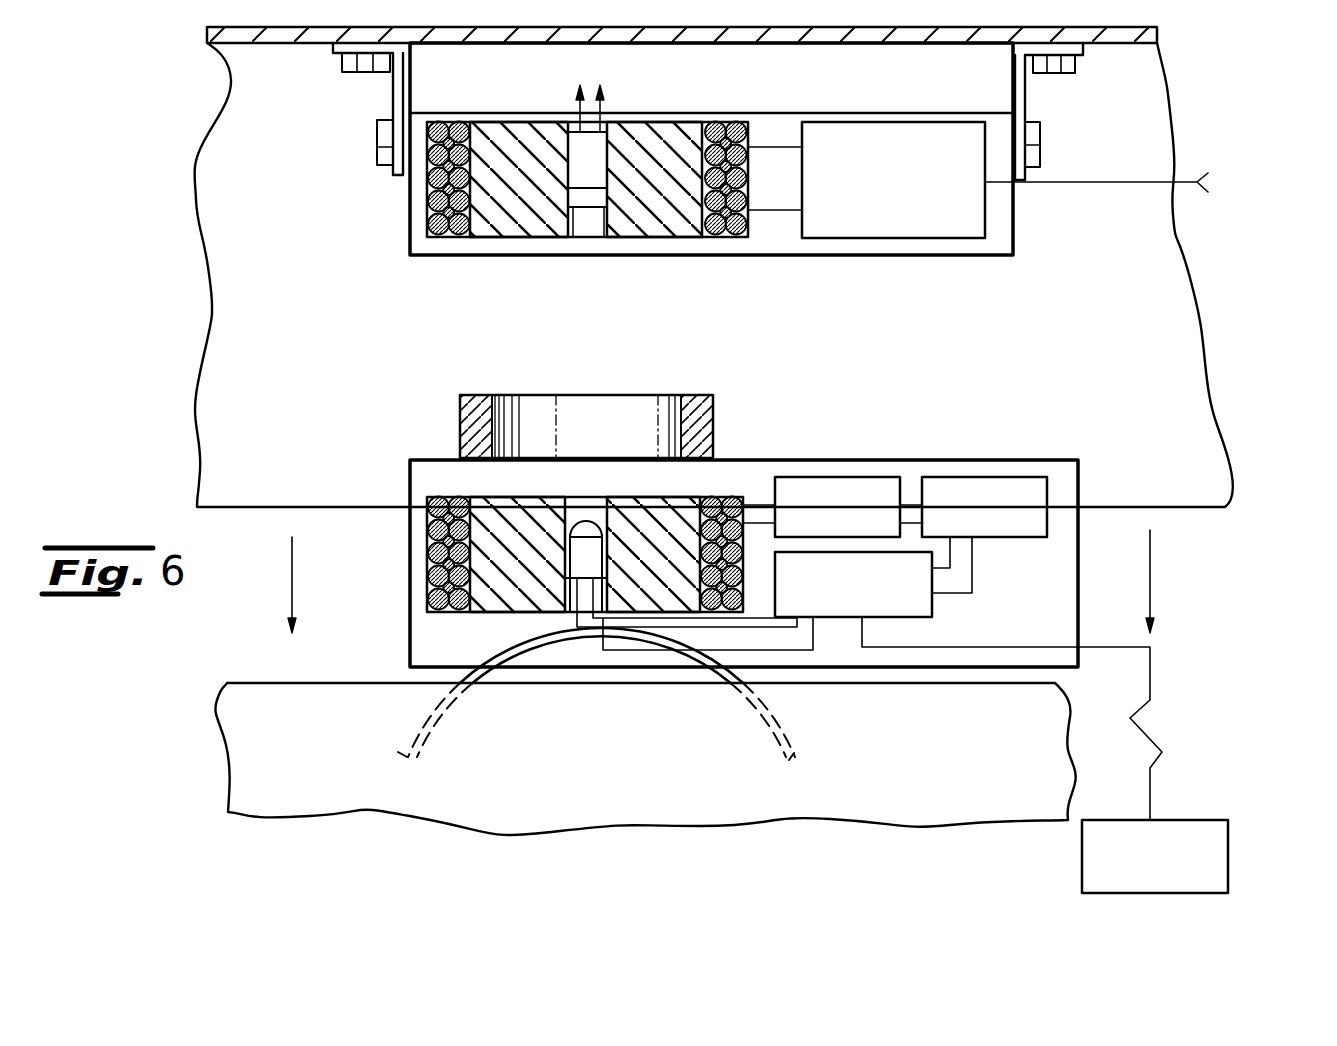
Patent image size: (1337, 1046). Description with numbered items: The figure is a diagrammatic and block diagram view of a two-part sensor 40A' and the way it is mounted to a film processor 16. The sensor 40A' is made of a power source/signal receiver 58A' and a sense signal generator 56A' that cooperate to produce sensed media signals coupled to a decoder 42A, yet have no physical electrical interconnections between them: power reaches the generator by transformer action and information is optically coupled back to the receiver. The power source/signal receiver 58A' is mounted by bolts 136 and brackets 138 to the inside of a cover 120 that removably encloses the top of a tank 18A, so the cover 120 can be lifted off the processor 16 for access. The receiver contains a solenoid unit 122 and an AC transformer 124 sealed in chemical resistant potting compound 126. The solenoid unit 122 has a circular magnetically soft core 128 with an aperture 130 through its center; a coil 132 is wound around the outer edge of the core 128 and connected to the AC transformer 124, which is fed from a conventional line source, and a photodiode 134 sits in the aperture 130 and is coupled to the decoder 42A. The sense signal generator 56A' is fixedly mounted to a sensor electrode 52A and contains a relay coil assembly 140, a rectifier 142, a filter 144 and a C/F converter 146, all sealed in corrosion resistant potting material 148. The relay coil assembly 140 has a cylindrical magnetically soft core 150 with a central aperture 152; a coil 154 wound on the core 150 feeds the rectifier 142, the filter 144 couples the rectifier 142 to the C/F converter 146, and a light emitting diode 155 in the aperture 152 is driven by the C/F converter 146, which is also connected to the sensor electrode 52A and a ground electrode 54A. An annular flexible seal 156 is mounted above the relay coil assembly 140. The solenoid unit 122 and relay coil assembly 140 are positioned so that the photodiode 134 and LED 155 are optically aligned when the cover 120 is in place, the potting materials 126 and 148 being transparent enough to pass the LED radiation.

The processor 16 is at (170, 698).
The tank 18A is at (260, 751).
The sensor 40A' is at (315, 195).
The decoder 42A is at (585, 63).
The sensor electrode 52A is at (521, 658).
The ground electrode 54A is at (1202, 820).
The sense signal generator 56A' is at (756, 595).
The power source/signal receiver 58A' is at (786, 191).
The cover 120 is at (223, 317).
The solenoid unit 122 is at (673, 238).
The AC transformer 124 is at (826, 228).
The chemical resistant potting compound 126 is at (603, 256).
The core 128 is at (508, 228).
The aperture 130 is at (583, 228).
The coil 132 is at (455, 128).
The photodiode 134 is at (596, 158).
The bolts 136 is at (377, 143).
The brackets 138 is at (397, 48).
The relay coil assembly 140 is at (492, 494).
The rectifier 142 is at (866, 480).
The filter 144 is at (1025, 480).
The C/F converter 146 is at (915, 618).
The corrosion resistant potting material 148 is at (1068, 485).
The core 150 is at (668, 510).
The aperture 152 is at (584, 507).
The coil 154 is at (427, 572).
The light emitting diode 155 is at (580, 525).
The annular flexible seal 156 is at (713, 412).